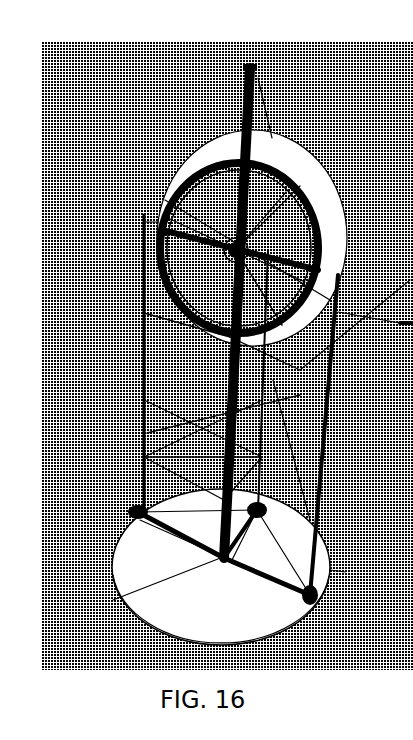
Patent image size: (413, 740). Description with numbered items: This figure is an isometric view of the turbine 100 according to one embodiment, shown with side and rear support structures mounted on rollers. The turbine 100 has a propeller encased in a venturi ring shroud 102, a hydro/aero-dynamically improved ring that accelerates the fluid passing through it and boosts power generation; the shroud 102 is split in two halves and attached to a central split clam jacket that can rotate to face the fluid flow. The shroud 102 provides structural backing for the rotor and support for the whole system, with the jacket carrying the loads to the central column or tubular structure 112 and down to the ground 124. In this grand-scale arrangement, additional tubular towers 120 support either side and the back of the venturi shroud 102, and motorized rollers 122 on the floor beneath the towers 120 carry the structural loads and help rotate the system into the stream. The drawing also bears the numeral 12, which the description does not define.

The stand assembly 100 is at (120, 116).
The wheel 102 is at (318, 198).
The center pole top 112 is at (257, 78).
The support posts 120 is at (143, 386).
The foot 122 is at (130, 511).
The base disk 124 is at (263, 622).
The base support 12 is at (345, 572).